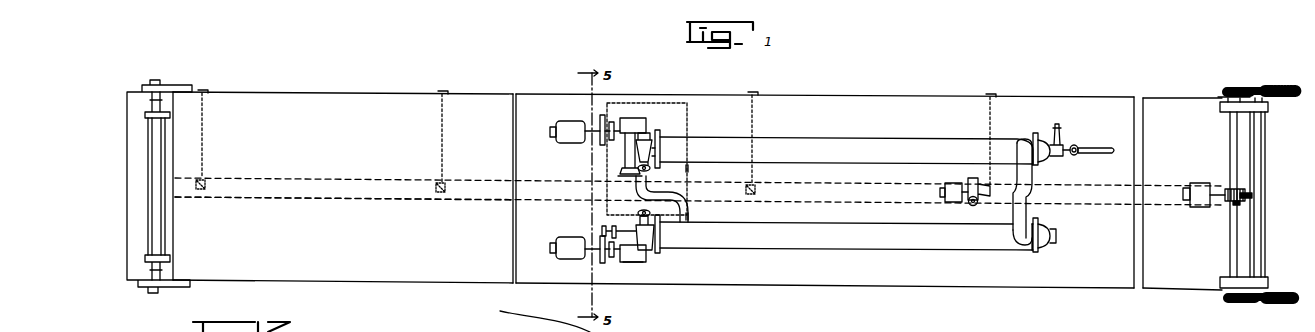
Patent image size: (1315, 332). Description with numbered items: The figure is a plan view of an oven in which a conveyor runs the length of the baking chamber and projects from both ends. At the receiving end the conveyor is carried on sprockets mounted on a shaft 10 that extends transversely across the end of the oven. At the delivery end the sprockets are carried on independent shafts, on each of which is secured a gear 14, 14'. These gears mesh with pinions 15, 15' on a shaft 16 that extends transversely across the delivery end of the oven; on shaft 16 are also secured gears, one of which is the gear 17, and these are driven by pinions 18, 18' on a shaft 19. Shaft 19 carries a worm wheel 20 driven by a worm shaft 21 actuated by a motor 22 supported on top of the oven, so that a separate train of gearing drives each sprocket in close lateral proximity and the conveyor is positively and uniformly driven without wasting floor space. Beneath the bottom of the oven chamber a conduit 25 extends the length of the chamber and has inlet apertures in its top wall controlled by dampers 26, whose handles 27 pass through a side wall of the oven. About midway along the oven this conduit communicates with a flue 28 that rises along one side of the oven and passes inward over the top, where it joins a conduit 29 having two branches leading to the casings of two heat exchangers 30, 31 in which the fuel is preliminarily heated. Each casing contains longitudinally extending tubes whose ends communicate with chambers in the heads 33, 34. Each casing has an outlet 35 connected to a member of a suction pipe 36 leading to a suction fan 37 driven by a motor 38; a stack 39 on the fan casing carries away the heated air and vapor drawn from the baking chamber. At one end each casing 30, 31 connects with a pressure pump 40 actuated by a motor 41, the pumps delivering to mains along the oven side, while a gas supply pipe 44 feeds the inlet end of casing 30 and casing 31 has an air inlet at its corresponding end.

The shaft 10 is at (160, 105).
The gear 14 is at (1283, 313).
The gear 14' is at (1282, 77).
The pinion 15 is at (1260, 313).
The pinion 15' is at (1255, 77).
The shaft 16 is at (1265, 257).
The gear 17 is at (1280, 100).
The pinion 18 is at (1228, 311).
The pinion 18' is at (1228, 81).
The shaft 19 is at (1228, 158).
The worm wheel 20 is at (1240, 190).
The worm shaft 21 is at (1248, 196).
The motor 22 is at (1200, 190).
The conduit 25 is at (388, 200).
The damper 26 is at (202, 182).
The handle 27 is at (202, 140).
The flue 28 is at (620, 176).
The conduit 29 is at (675, 190).
The heat exchanger 30 is at (805, 145).
The heat exchanger 31 is at (828, 240).
The head 33 is at (655, 135).
The head 34 is at (652, 252).
The outlet 35 is at (1020, 140).
The suction pipe 36 is at (1010, 175).
The suction fan 37 is at (958, 186).
The motor 38 is at (948, 178).
The stack 39 is at (968, 204).
The pressure pump 40 is at (635, 120).
The motor 41 is at (575, 124).
The gas supply pipe 44 is at (1100, 140).